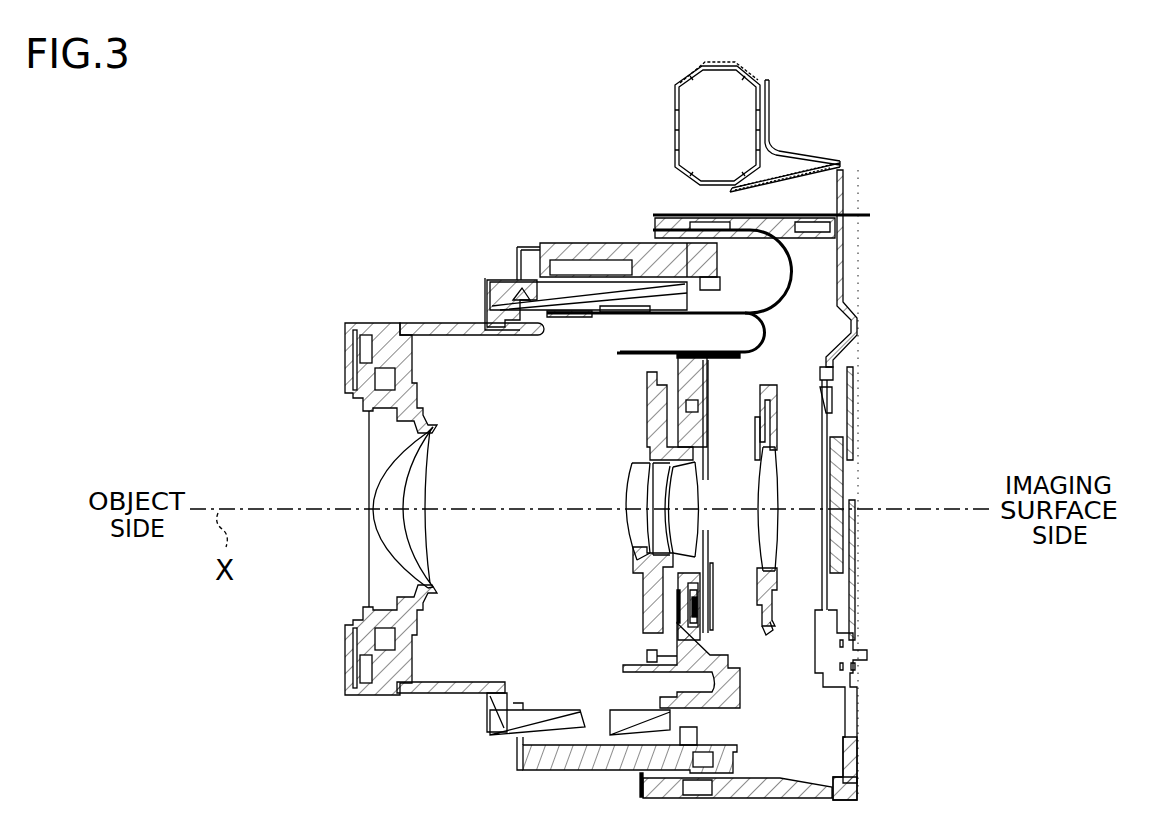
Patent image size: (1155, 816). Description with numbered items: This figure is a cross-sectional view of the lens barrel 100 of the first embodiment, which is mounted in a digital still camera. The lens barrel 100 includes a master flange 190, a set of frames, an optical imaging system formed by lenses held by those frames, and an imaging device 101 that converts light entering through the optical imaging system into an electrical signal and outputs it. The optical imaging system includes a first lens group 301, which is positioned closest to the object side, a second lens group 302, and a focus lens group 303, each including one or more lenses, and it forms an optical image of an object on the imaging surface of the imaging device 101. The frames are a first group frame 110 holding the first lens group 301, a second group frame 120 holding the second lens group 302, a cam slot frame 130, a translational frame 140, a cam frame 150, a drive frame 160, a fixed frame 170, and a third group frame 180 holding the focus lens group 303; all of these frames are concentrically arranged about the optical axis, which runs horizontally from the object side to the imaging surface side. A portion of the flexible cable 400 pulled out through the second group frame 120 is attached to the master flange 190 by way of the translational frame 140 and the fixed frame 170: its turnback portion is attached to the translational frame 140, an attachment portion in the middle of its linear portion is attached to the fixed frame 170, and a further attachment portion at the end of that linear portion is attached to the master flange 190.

The lens barrel 100 is at (636, 66).
The first group frame 110 is at (406, 321).
The second group frame 120 is at (747, 697).
The cam slot frame 130 is at (748, 752).
The translational frame 140 is at (576, 322).
The cam frame 150 is at (502, 278).
The drive frame 160 is at (590, 244).
The fixed frame 170 is at (652, 214).
The third group frame 180 is at (770, 600).
The master flange 190 is at (845, 262).
The imaging device 101 is at (847, 496).
The first lens group 301 is at (377, 470).
The second lens group 302 is at (630, 527).
The focus lens group 303 is at (790, 538).
The flexible cable 400 is at (770, 331).